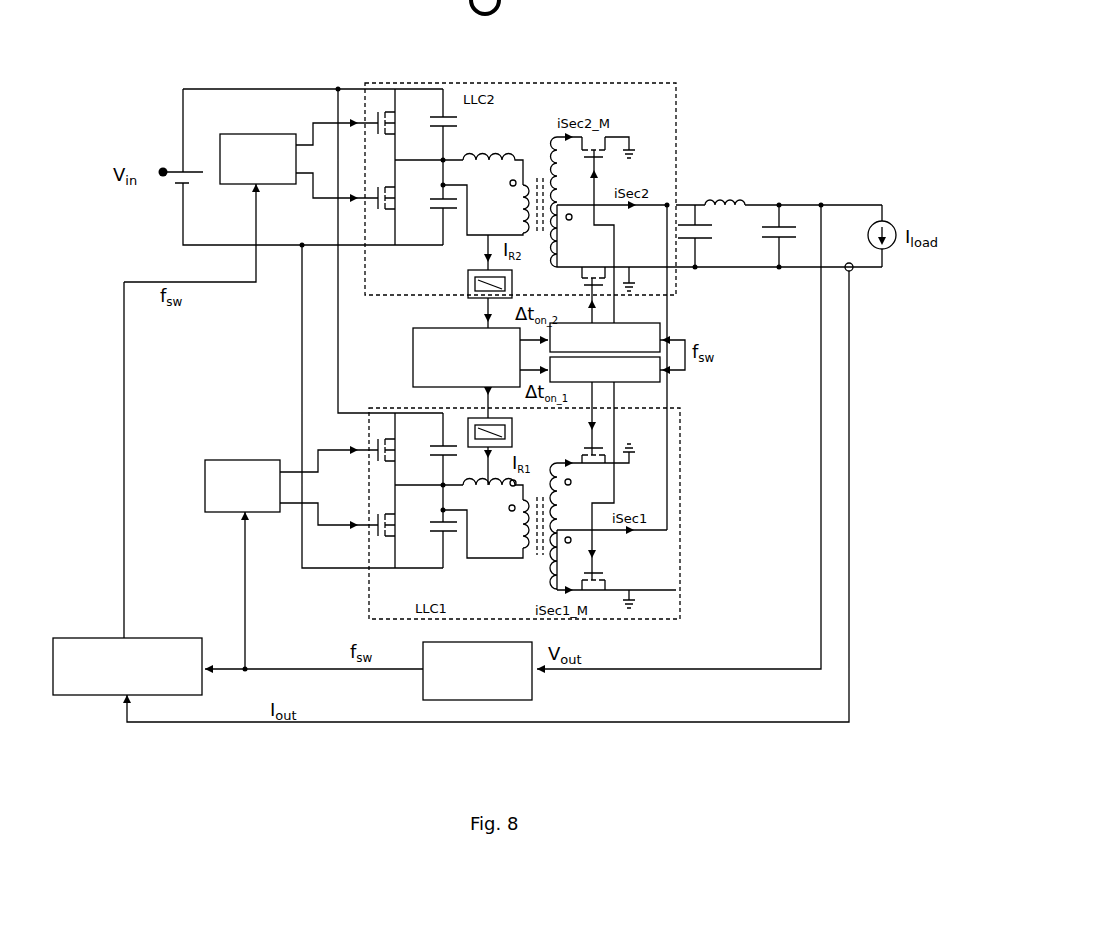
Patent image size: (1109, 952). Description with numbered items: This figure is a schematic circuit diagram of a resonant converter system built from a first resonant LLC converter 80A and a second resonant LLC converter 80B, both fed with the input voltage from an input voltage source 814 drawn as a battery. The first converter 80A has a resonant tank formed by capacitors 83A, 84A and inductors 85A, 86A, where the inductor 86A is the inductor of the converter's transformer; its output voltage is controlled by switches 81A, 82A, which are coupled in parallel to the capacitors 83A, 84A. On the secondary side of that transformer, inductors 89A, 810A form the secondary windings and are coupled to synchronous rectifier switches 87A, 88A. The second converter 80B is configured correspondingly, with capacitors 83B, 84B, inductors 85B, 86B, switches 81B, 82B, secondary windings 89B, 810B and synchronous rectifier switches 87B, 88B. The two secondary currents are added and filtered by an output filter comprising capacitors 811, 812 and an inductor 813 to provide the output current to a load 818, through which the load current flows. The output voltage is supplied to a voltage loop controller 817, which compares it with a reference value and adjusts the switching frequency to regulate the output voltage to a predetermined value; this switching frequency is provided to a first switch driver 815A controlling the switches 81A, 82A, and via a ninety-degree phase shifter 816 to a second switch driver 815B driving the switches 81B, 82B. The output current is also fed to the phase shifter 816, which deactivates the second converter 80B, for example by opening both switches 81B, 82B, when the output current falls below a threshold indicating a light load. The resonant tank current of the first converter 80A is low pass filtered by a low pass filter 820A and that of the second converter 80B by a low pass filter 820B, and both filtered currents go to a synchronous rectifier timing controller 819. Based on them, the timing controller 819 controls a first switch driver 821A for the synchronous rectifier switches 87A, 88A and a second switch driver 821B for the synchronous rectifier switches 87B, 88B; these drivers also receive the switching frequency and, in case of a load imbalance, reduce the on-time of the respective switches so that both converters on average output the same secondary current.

The first resonant LLC converter 80A is at (680, 420).
The second resonant LLC converter 80B is at (675, 110).
The switch 81A is at (385, 439).
The switch 81B is at (385, 110).
The switch 82A is at (385, 514).
The switch 82B is at (385, 189).
The capacitor 83A is at (447, 442).
The capacitor 83B is at (452, 114).
The capacitor 84A is at (434, 537).
The capacitor 84B is at (437, 207).
The inductor 85A is at (482, 466).
The inductor 85B is at (483, 155).
The inductor 86A is at (527, 500).
The inductor 86B is at (527, 187).
The synchronous rectifier switch 87A is at (603, 463).
The synchronous rectifier switch 87B is at (606, 151).
The synchronous rectifier switch 88A is at (605, 587).
The synchronous rectifier switch 88B is at (585, 270).
The inductor 89A is at (555, 558).
The inductor 89B is at (555, 248).
The inductor 810A is at (557, 495).
The inductor 810B is at (557, 183).
The capacitor 811 is at (710, 240).
The capacitor 812 is at (796, 227).
The inductor 813 is at (753, 198).
The input voltage source 814 is at (163, 172).
The first switch driver 815A is at (263, 462).
The second switch driver 815B is at (273, 137).
The 90-degree phase shifter 816 is at (93, 642).
The voltage loop controller 817 is at (512, 697).
The load 818 is at (895, 225).
The synchronous rectifier timing controller 819 is at (448, 328).
The low pass filter 820A is at (468, 432).
The low pass filter 820B is at (515, 285).
The first switch driver 821A is at (645, 383).
The second switch driver 821B is at (653, 323).